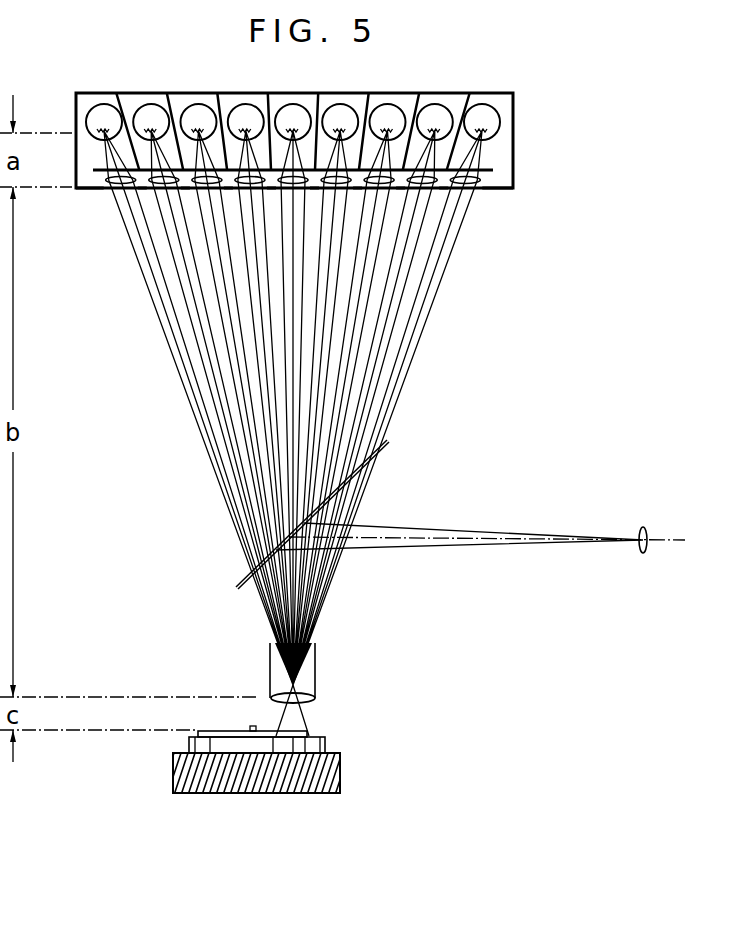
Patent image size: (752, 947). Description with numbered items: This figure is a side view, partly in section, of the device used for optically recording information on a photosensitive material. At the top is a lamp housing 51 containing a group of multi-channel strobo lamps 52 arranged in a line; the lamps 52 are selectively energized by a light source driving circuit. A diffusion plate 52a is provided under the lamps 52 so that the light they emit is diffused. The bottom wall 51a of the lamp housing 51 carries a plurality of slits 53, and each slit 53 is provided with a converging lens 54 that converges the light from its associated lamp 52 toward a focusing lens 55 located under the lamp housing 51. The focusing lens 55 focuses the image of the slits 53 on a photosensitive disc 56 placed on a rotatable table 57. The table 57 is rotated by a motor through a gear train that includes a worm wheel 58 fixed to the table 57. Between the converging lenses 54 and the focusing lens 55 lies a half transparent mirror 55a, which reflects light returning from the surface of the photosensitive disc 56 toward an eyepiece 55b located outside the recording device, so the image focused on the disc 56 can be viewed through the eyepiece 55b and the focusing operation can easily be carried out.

The lamp housing 51 is at (305, 93).
The bottom wall 51a is at (80, 190).
The strobo lamps 52 is at (203, 98).
The diffusion plate 52a is at (490, 170).
The slits 53 is at (120, 189).
The converging lens 54 is at (172, 187).
The focusing lens 55 is at (313, 696).
The half transparent mirror 55a is at (243, 585).
The eyepiece 55b is at (643, 553).
The photosensitive disc 56 is at (215, 731).
The rotatable table 57 is at (327, 746).
The worm wheel 58 is at (340, 776).